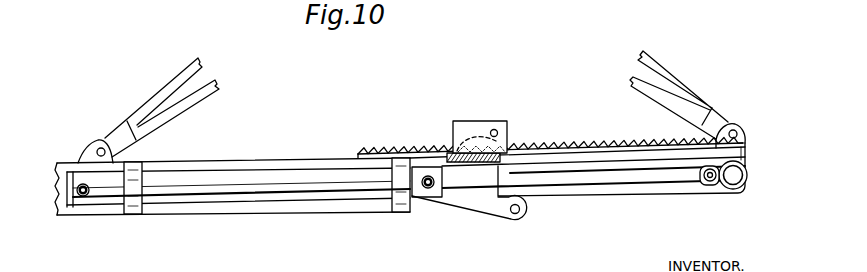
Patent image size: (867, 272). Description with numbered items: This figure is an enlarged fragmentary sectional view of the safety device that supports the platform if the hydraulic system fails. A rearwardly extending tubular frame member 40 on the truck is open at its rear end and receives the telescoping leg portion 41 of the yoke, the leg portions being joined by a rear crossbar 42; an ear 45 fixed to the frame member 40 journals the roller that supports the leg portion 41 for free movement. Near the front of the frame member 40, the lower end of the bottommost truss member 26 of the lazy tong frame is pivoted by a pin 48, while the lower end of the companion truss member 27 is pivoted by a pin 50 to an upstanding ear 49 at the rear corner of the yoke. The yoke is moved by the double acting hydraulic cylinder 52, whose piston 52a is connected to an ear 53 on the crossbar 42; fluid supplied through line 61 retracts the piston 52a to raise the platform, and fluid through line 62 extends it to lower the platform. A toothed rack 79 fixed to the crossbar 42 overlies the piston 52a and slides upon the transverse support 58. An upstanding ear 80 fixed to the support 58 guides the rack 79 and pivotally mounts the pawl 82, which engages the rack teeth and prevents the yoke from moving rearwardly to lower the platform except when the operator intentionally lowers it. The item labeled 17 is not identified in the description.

The hinge lug 17 is at (92, 147).
The truss member 26 is at (177, 78).
The truss member 27 is at (678, 83).
The tubular frame member 40 is at (273, 165).
The leg portion 41 is at (647, 192).
The rear crossbar 42 is at (747, 176).
The ear 45 is at (513, 220).
The pin 48 is at (104, 141).
The upstanding ear 49 is at (743, 137).
The pin 50 is at (734, 132).
The hydraulic cylinder 52 is at (237, 190).
The piston 52a is at (635, 182).
The ear 53 is at (710, 181).
The transverse support 58 is at (450, 152).
The fluid supply line 61 is at (427, 188).
The fluid supply line 62 is at (85, 197).
The rack 79 is at (560, 141).
The upstanding ear 80 is at (470, 125).
The pawl 82 is at (483, 130).